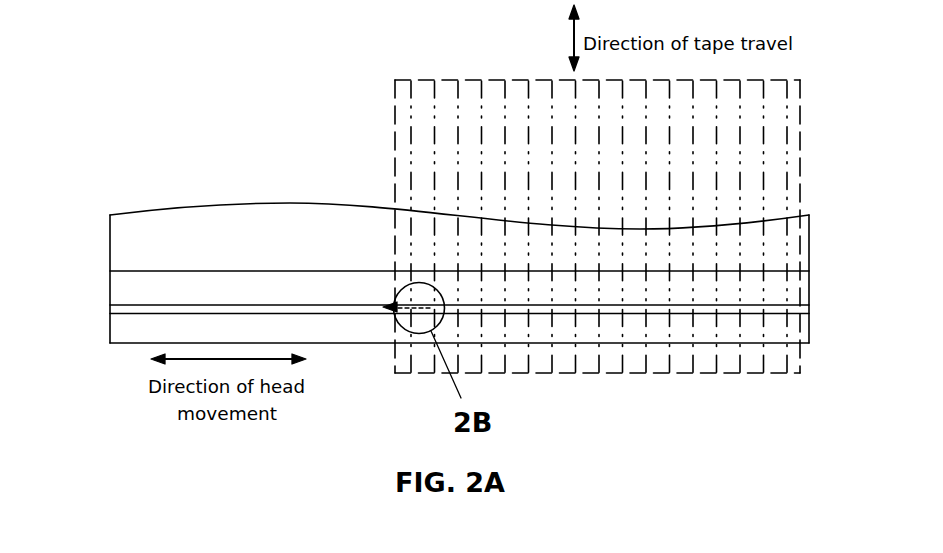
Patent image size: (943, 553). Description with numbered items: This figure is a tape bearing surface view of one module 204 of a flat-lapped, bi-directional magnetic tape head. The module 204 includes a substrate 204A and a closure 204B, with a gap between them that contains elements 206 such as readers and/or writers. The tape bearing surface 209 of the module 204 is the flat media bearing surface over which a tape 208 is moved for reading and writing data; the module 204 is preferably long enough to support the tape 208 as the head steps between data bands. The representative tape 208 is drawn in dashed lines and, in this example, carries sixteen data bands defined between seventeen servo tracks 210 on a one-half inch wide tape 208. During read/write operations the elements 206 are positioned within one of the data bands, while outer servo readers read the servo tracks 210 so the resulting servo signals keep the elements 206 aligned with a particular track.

The module 204 is at (152, 192).
The substrate 204A is at (246, 203).
The closure 204B is at (110, 330).
The elements 206 is at (383, 308).
The tape 208 is at (395, 83).
The tape bearing surface 209 is at (300, 292).
The servo tracks 210 is at (503, 163).